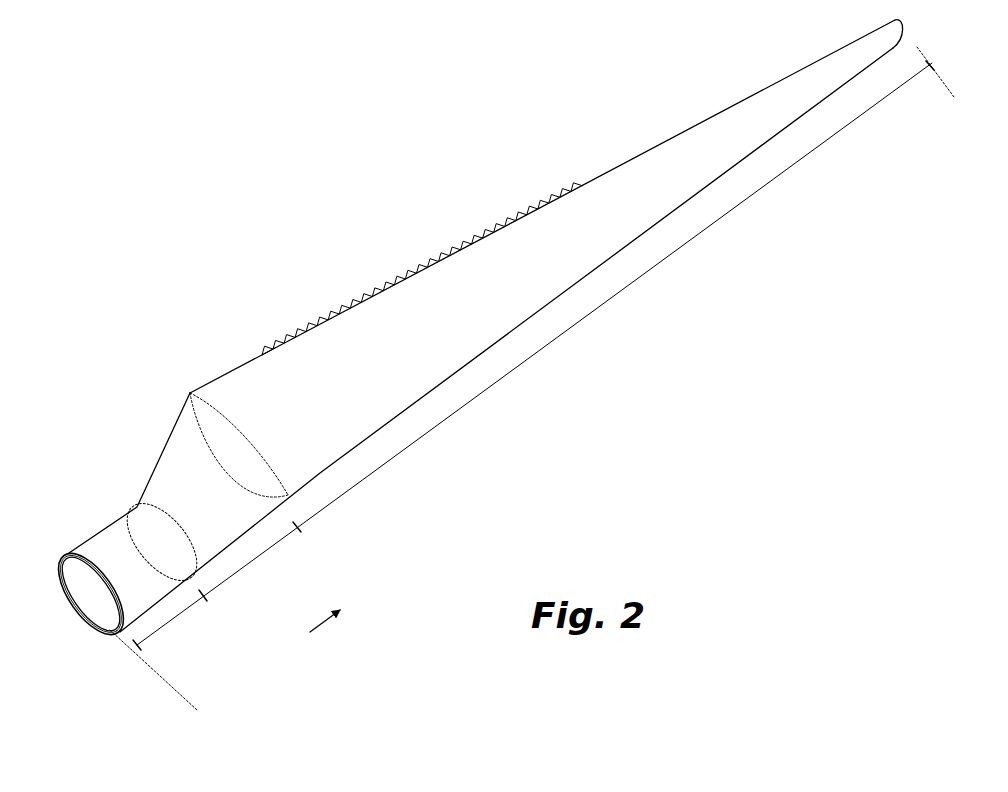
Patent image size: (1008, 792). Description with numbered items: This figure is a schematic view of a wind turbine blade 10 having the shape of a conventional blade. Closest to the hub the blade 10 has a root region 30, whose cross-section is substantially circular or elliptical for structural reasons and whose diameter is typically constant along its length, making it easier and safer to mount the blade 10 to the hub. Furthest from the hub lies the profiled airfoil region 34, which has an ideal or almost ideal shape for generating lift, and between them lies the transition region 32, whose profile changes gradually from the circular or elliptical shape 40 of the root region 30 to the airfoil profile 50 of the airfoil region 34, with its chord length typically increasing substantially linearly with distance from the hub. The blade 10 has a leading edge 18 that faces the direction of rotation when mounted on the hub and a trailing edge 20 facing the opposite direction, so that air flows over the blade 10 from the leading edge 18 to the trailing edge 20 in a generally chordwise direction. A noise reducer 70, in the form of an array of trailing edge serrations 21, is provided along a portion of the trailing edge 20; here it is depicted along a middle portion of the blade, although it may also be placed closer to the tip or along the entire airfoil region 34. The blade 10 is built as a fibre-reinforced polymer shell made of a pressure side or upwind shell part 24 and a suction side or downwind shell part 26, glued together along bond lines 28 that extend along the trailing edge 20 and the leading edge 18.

The wind turbine blade 10 is at (509, 365).
The leading edge 18 is at (647, 237).
The trailing edge 20 is at (527, 202).
The trailing edge serrations 21 is at (285, 333).
The pressure side or upwind shell part 24 is at (78, 552).
The suction side or downwind shell part 26 is at (103, 626).
The bond lines 28 is at (80, 553).
The root region 30 is at (178, 615).
The transition region 32 is at (260, 556).
The airfoil region 34 is at (552, 343).
The circular or elliptical shape 40 is at (137, 507).
The airfoil profile 50 is at (190, 393).
The noise reducer 70 is at (450, 218).